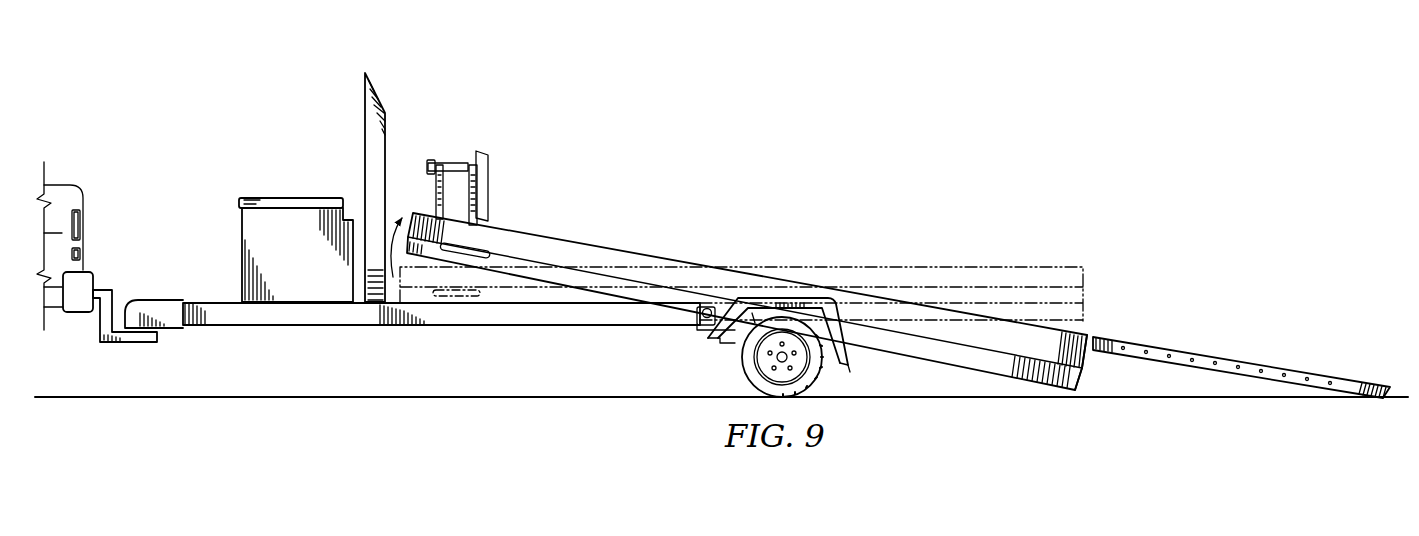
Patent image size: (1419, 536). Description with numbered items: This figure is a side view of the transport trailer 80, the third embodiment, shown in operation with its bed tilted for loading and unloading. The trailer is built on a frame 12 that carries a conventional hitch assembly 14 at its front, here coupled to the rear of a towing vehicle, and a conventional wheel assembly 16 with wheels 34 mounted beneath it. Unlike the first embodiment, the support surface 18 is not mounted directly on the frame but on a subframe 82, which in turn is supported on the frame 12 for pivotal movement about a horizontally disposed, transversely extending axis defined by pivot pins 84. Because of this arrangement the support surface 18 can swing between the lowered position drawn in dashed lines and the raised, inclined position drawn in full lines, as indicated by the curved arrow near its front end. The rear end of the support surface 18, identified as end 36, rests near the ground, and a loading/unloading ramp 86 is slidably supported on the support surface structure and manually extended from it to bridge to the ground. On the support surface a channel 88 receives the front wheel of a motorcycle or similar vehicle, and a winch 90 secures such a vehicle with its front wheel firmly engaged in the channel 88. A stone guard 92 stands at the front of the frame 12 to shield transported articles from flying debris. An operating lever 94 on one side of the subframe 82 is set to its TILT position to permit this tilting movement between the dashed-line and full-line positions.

The frame 12 is at (495, 326).
The hitch assembly 14 is at (208, 300).
The wheel assembly 16 is at (757, 347).
The support surface 18 is at (782, 244).
The wheels 34 is at (823, 372).
The rear end of platform 36 is at (1064, 333).
The transport trailer 80 is at (567, 188).
The subframe 82 is at (559, 272).
The pivot pins 84 is at (700, 313).
The loading/unloading ramps 86 is at (1229, 353).
The channel 88 is at (486, 165).
The winch 90 is at (438, 158).
The stone guard 92 is at (365, 130).
The operating lever 94 is at (482, 252).